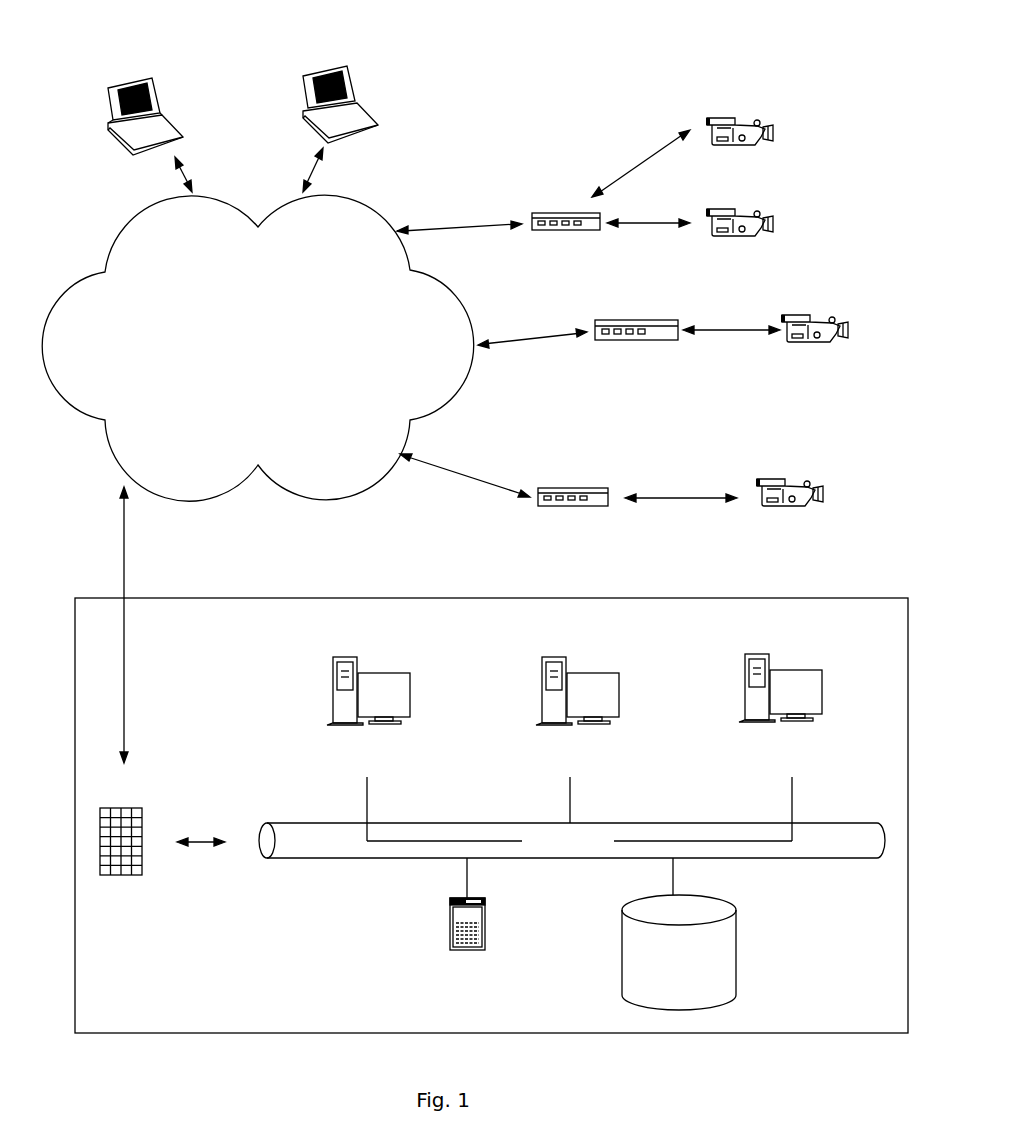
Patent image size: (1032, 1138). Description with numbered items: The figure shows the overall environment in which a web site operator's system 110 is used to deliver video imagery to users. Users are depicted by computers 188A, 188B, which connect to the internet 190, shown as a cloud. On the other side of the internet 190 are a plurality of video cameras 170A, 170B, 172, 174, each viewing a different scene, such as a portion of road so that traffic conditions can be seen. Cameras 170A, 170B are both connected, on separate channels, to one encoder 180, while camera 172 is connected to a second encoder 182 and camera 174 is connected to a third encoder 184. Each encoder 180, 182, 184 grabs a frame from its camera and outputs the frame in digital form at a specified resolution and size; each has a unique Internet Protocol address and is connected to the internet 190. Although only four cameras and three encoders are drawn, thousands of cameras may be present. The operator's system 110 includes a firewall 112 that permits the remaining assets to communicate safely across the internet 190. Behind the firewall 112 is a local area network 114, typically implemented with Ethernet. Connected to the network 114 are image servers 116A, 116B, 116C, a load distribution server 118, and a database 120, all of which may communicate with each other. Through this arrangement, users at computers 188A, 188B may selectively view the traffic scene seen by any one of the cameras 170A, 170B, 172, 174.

The system 110 is at (212, 1010).
The firewall 112 is at (142, 808).
The local area network 114 is at (363, 860).
The image server 116A is at (365, 662).
The image server 116B is at (575, 660).
The image server 116C is at (780, 657).
The load distribution server 118 is at (450, 922).
The database 120 is at (736, 952).
The video camera 170A is at (723, 117).
The video camera 170B is at (732, 208).
The video camera 172 is at (800, 313).
The video camera 174 is at (775, 465).
The encoder 180 is at (596, 213).
The second encoder 182 is at (638, 320).
The third encoder 184 is at (577, 488).
The computer 188A is at (115, 72).
The computer 188B is at (313, 53).
The internet 190 is at (170, 443).